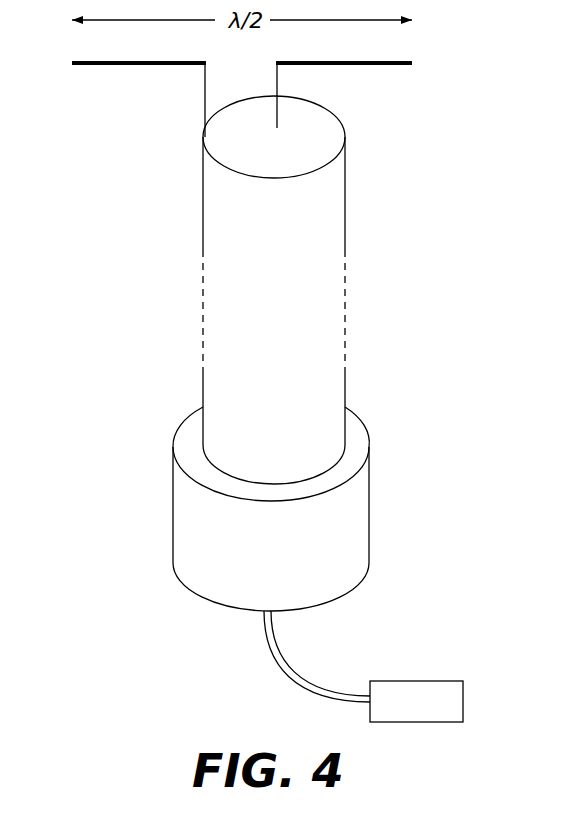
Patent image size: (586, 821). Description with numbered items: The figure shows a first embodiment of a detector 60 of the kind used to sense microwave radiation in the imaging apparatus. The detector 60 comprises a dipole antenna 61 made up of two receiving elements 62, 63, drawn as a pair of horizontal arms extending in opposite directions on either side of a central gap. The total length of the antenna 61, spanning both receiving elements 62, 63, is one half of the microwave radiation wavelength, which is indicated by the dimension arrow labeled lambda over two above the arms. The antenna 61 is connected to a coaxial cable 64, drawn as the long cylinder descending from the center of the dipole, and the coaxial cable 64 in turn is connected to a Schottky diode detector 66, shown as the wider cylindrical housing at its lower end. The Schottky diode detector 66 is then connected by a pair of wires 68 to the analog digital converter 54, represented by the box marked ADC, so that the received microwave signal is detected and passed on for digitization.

The analog digital converter 54 is at (437, 681).
The detector 60 is at (128, 318).
The dipole antenna 61 is at (241, 73).
The receiving element 62 is at (100, 65).
The receiving element 63 is at (345, 65).
The coaxial cable 64 is at (345, 388).
The Schottky diode detector 66 is at (369, 508).
The pair of wires 68 is at (303, 675).